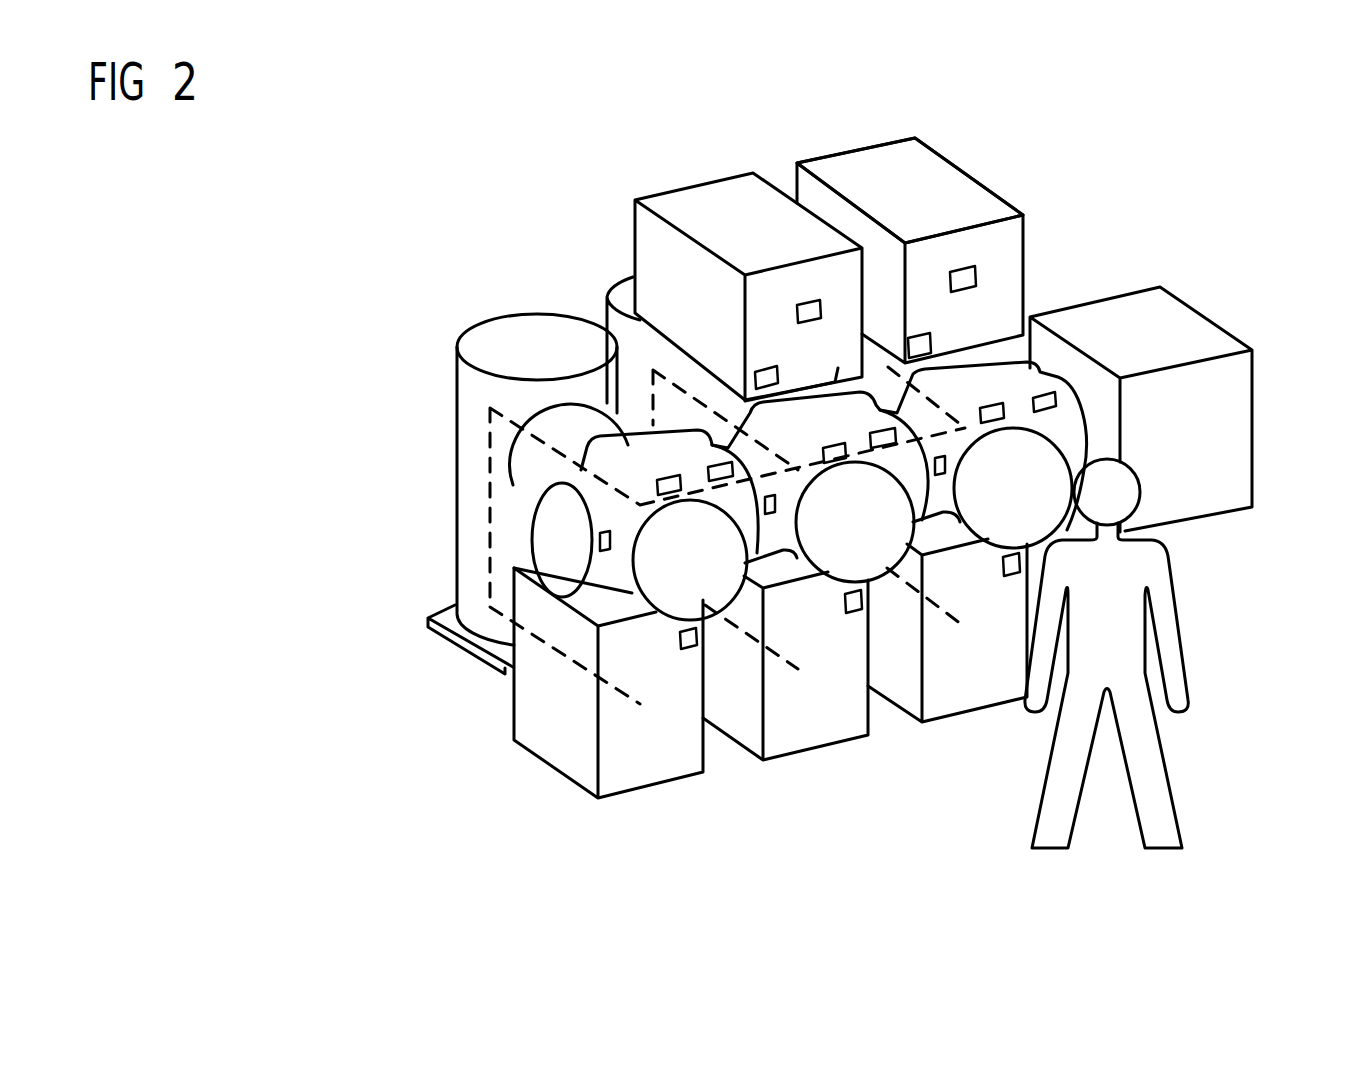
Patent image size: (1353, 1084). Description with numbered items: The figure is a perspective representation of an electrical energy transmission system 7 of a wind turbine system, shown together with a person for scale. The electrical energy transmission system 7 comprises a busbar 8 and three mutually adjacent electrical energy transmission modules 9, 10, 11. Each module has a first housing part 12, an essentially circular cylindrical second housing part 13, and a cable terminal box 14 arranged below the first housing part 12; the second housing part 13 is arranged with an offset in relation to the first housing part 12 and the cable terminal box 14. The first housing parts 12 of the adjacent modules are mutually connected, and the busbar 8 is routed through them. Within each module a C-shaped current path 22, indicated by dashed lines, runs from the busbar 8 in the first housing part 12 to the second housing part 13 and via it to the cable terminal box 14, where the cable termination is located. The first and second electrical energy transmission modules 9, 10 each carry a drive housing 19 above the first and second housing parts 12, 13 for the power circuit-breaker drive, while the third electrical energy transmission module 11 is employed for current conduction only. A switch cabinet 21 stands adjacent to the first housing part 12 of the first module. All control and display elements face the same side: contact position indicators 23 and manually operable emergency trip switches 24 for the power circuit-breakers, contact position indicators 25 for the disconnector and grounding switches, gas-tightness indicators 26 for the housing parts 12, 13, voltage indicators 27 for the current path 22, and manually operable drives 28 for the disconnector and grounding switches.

The electrical energy transmission system 7 is at (1218, 202).
The busbar 8 is at (937, 438).
The first electrical energy transmission module 9 is at (847, 145).
The second electrical energy transmission module 10 is at (688, 172).
The third electrical energy transmission module 11 is at (481, 254).
The first housing part 12 is at (556, 536).
The second housing part 13 is at (477, 417).
The cable terminal box 14 is at (655, 762).
The drive housing 19 is at (953, 184).
The switch cabinet 21 is at (1182, 323).
The current path 22 is at (487, 486).
The contact position indicator 23 is at (810, 302).
The manually operable emergency trip switch 24 is at (765, 368).
The contact position indicator 25 is at (714, 468).
The gas-tightness indicator 26 is at (598, 542).
The voltage indicator 27 is at (690, 652).
The manually operable drive 28 is at (678, 497).